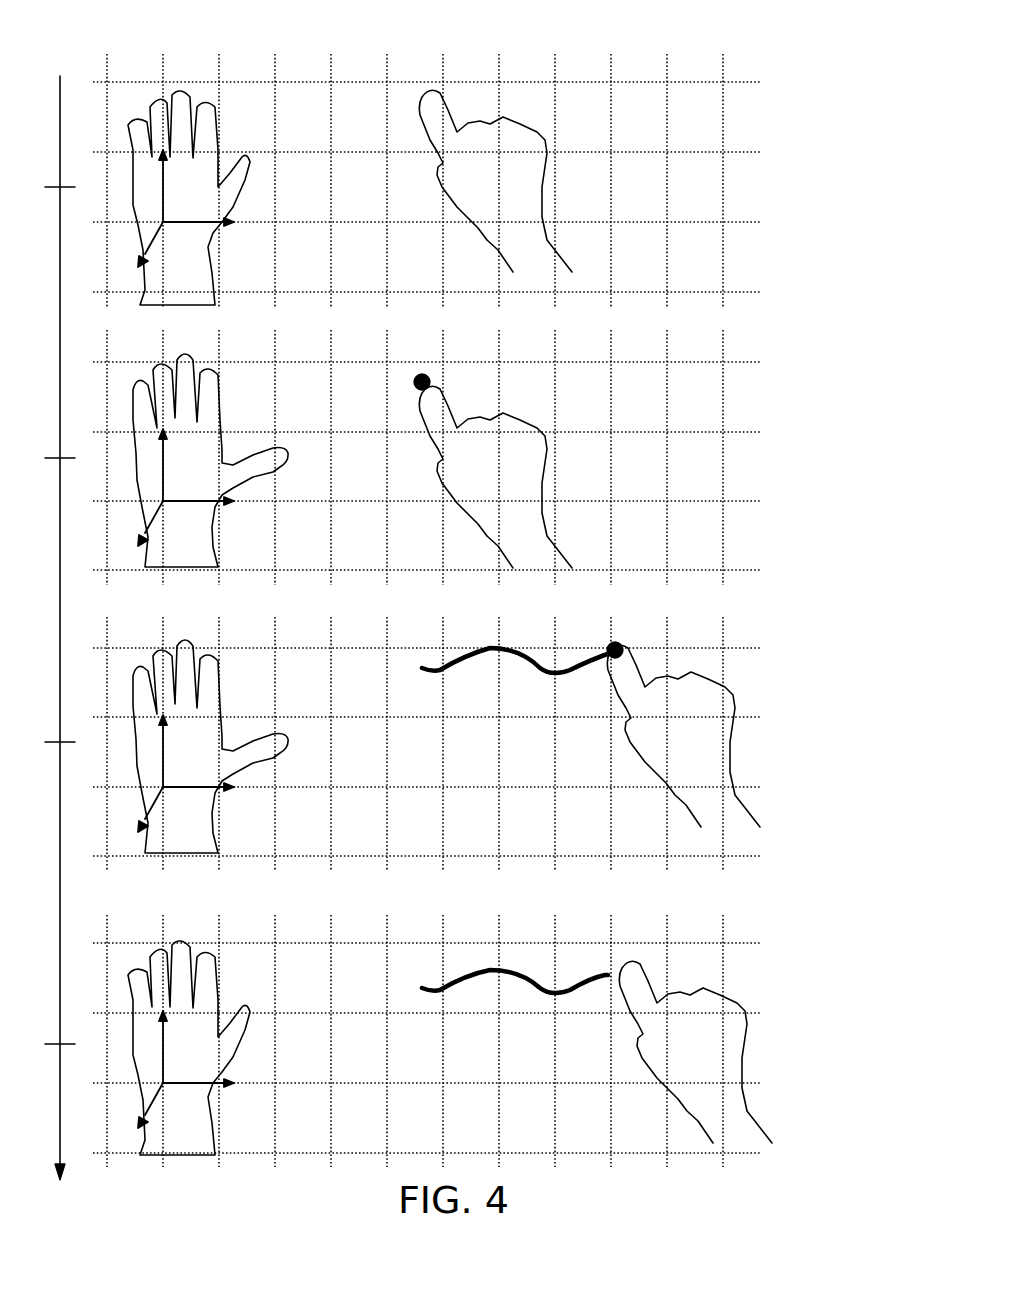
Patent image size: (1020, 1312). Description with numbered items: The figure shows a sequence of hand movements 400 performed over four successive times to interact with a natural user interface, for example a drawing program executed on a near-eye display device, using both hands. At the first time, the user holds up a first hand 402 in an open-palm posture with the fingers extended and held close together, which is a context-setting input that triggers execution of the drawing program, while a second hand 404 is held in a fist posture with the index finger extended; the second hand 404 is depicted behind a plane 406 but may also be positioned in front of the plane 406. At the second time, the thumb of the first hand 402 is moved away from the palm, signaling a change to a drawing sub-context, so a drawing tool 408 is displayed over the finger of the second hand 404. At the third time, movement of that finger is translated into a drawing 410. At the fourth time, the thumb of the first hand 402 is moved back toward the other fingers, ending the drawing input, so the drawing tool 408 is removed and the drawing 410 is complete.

The sequence of hand movements 400 is at (718, 28).
The first hand 402 is at (210, 272).
The second hand 404 is at (540, 233).
The plane 406 is at (728, 82).
The drawing tool 408 is at (432, 378).
The drawing 410 is at (503, 650).